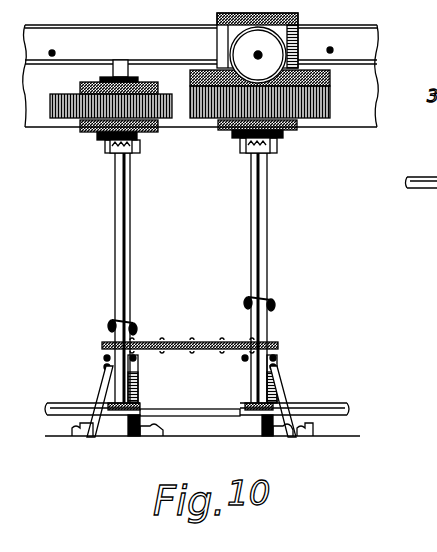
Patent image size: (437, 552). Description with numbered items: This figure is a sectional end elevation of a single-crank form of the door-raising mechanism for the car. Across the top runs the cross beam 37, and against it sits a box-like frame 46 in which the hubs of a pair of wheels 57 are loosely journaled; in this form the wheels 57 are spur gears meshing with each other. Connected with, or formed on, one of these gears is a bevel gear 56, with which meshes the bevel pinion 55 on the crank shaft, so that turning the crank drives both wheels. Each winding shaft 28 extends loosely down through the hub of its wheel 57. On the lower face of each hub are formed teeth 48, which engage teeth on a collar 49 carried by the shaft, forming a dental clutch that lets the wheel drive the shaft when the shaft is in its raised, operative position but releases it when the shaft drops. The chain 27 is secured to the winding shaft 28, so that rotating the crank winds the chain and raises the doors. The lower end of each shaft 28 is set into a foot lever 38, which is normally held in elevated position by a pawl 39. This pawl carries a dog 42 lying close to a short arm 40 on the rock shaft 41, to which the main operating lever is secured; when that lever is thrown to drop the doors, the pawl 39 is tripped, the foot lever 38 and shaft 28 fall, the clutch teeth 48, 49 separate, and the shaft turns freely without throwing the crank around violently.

The cross beam 37 is at (375, 33).
The box-like frame 46 is at (218, 17).
The bevel pinion 55 is at (258, 55).
The pawl 39 is at (254, 56).
The bevel gear 56 is at (318, 78).
The wheels (spur gears) 57 is at (50, 107).
The teeth 48 is at (108, 133).
The collar 49 is at (108, 153).
The winding shaft 28 is at (130, 255).
The chain 27 is at (133, 327).
The dog 42 is at (140, 367).
The short arm 40 is at (140, 388).
The rock shaft 41 is at (222, 408).
The foot lever 38 is at (202, 421).